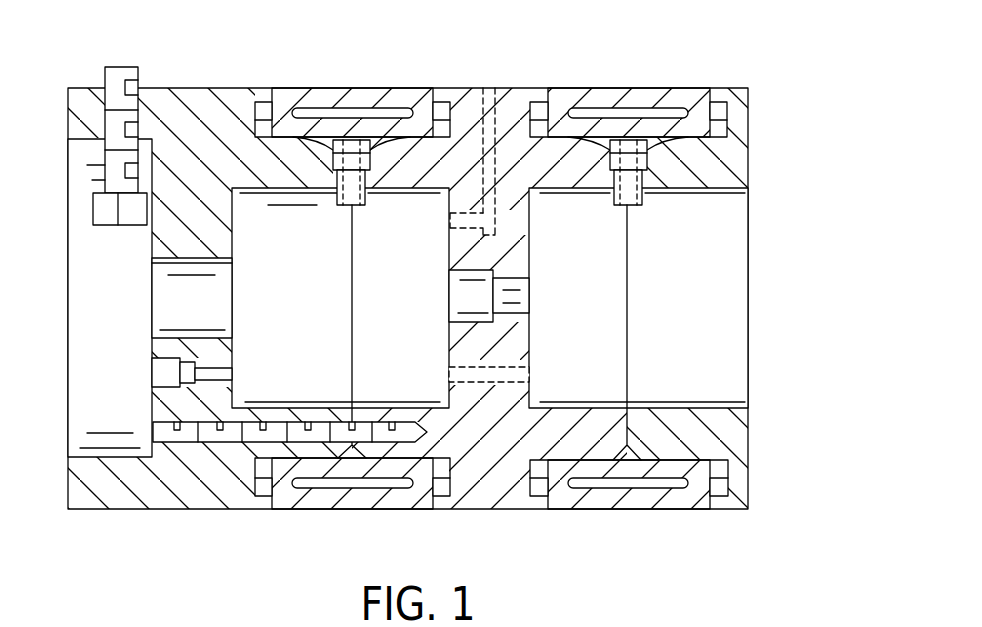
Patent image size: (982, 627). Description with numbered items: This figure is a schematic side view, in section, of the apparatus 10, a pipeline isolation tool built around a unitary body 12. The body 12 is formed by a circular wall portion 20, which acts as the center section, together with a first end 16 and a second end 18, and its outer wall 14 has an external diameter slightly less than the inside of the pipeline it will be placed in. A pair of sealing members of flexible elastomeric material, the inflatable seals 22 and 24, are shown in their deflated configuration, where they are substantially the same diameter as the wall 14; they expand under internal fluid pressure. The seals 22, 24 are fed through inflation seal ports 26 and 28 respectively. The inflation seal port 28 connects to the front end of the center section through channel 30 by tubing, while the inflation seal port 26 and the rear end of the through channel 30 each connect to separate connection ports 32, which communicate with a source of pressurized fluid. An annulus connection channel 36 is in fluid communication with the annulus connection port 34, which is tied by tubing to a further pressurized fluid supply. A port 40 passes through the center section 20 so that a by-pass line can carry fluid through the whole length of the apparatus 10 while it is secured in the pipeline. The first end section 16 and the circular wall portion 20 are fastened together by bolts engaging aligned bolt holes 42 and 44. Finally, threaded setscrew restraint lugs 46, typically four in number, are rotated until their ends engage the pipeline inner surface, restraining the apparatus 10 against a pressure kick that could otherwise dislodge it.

The apparatus 10 is at (619, 46).
The unitary body 12 is at (754, 137).
The wall of the apparatus 14 is at (198, 88).
The first end 16 is at (157, 88).
The second end 18 is at (717, 192).
The circular wall portion 20 is at (465, 88).
The inflatable seal 22 is at (356, 94).
The inflatable seal 24 is at (628, 95).
The inflation seal port 26 is at (349, 210).
The inflation seal port 28 is at (633, 207).
The center section through channel 30 is at (530, 372).
The connection port 32 is at (232, 375).
The annulus connection port 34 is at (449, 222).
The annulus connection channel 36 is at (507, 92).
The port 40 is at (530, 288).
The bolt hole 42 is at (192, 445).
The bolt hole 44 is at (420, 432).
The threaded setscrew restraint lug 46 is at (120, 66).